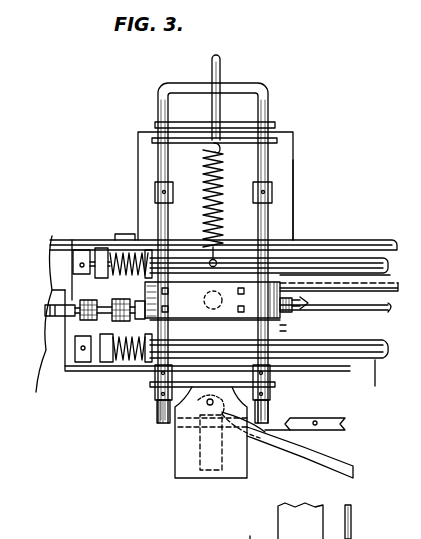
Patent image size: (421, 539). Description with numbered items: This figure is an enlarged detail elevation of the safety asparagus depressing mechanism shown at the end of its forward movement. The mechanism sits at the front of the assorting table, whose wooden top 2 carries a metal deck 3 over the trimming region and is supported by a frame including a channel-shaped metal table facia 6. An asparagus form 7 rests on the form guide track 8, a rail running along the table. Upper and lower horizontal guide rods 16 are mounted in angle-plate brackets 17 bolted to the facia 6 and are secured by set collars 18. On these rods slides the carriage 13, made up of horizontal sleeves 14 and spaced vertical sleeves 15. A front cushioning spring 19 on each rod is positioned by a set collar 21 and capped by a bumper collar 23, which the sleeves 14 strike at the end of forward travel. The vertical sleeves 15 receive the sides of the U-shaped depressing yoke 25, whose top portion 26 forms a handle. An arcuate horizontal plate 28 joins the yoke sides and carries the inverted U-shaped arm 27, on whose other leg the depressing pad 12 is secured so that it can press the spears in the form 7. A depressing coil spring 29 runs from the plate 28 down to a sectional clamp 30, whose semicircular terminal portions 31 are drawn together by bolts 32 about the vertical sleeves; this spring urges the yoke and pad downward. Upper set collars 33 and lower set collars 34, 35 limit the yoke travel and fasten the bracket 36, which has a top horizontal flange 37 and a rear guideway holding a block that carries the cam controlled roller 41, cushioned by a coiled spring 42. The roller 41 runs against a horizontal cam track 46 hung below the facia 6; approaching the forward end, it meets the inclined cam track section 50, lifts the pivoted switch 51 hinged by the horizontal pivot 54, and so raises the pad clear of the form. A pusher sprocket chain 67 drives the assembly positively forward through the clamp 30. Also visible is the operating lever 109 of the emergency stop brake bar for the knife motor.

The wooden top 2 is at (390, 271).
The metal deck 3 is at (370, 262).
The metal table facia 6 is at (375, 386).
The asparagus form 7 is at (138, 168).
The form guide track 8 is at (343, 240).
The depressing pad 12 is at (275, 127).
The slidable frame or carriage 13 is at (280, 240).
The horizontal sleeves 14 is at (196, 268).
The vertical sleeves 15 is at (274, 329).
The guide rods 16 is at (372, 268).
The brackets 17 is at (190, 325).
The set collars 18 is at (83, 262).
The front cushioning springs 19 is at (118, 262).
The set collars 21 is at (101, 260).
The bumper collars 23 is at (152, 262).
The depressing yoke 25 is at (290, 160).
The top handle portion 26 is at (240, 92).
The inverted U-shaped arm 27 is at (212, 69).
The horizontal plate 28 is at (152, 140).
The depressing coil spring 29 is at (222, 208).
The sectional clamp 30 is at (213, 309).
The semicircular terminal portions 31 is at (147, 290).
The bolts 32 is at (247, 318).
The upper set collars 33 is at (155, 192).
The lower set collar 34 is at (157, 403).
The lower set collar 35 is at (158, 402).
The bracket 36 is at (187, 478).
The horizontal flange 37 is at (202, 386).
The cam controlled roller 41 is at (222, 412).
The coiled spring 42 is at (255, 534).
The horizontal cam track 46 is at (410, 425).
The inclined cam track section 50 is at (340, 472).
The pivoted switch section 51 is at (280, 455).
The horizontal pivot 54 is at (320, 418).
The pusher sprocket chain 67 is at (385, 306).
The operating lever 109 is at (334, 521).